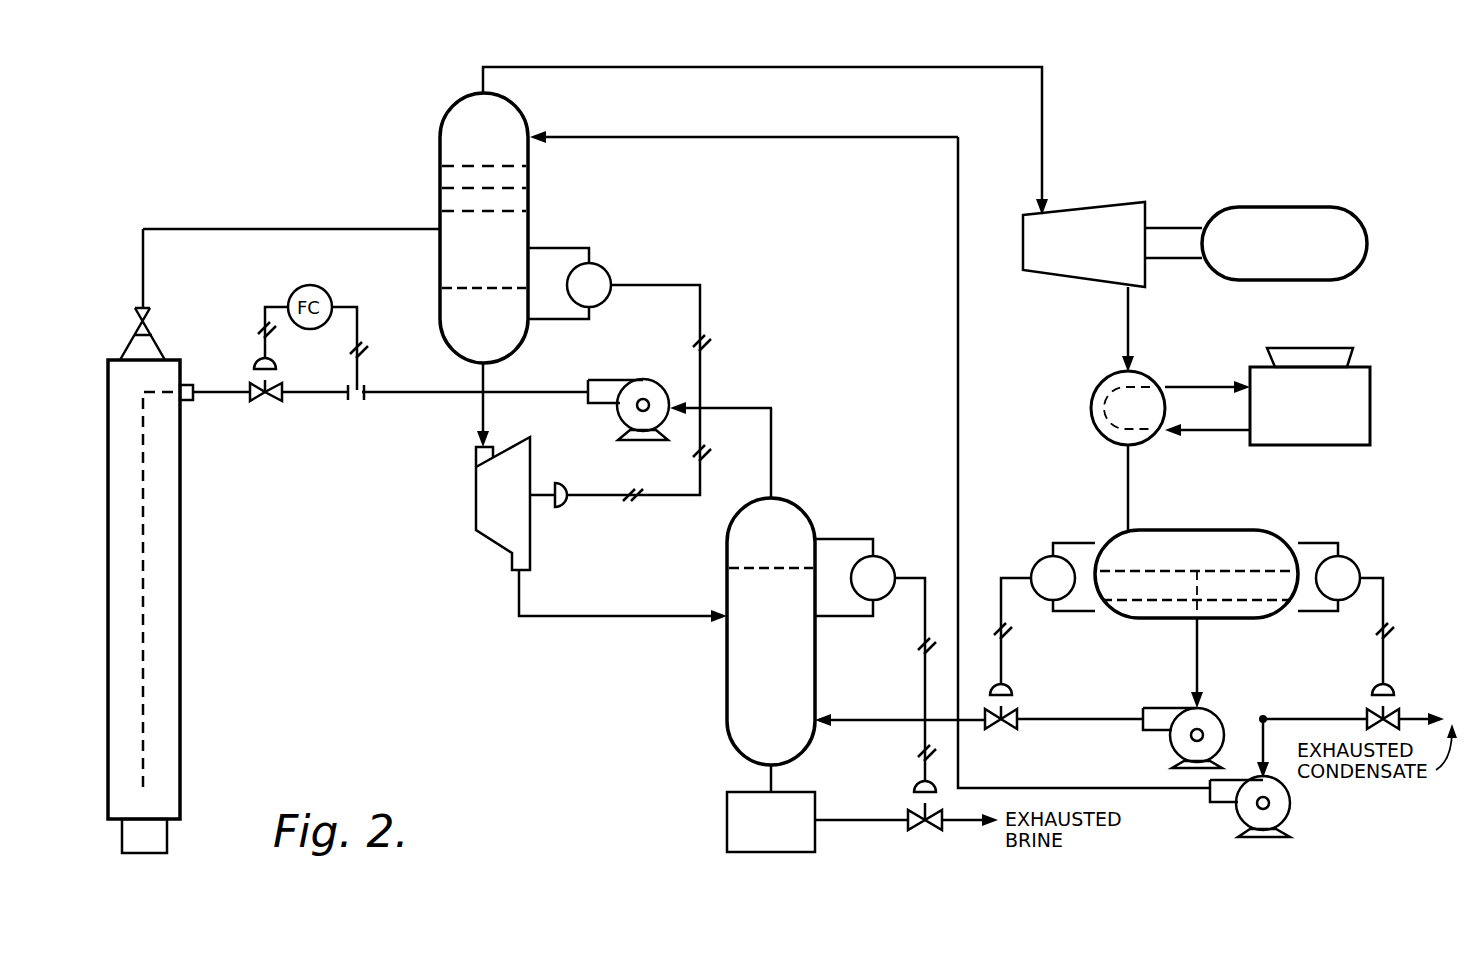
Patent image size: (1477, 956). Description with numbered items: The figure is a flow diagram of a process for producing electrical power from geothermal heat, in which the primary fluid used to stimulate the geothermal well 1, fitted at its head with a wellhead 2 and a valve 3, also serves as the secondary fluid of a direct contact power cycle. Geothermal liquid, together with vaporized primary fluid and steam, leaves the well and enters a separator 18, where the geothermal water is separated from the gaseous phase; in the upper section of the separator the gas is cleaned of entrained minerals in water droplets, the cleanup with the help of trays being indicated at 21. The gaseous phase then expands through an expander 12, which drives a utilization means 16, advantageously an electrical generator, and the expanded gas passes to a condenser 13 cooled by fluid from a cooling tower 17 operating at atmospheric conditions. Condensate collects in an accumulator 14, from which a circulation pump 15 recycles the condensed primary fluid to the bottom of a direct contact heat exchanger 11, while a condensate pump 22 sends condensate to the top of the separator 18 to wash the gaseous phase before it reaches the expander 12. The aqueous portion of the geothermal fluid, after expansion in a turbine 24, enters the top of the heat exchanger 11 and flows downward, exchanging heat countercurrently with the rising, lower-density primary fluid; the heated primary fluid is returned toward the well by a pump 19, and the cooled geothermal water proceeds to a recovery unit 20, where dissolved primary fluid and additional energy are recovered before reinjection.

The geothermal well 1 is at (180, 517).
The wellhead 2 is at (165, 352).
The wellhead valve 3 is at (150, 326).
The direct contact heat exchanger 11 is at (727, 690).
The expander 12 is at (1103, 205).
The condenser 13 is at (1093, 392).
The accumulator 14 is at (1213, 530).
The circulation pump 15 is at (1176, 708).
The utilization means 16 is at (1293, 207).
The cooling tower 17 is at (1370, 393).
The separator 18 is at (440, 132).
The recirculation pump 19 is at (645, 380).
The recovery unit 20 is at (727, 818).
The trays 21 is at (510, 208).
The condensate pump 22 is at (1290, 802).
The turbine 24 is at (476, 503).